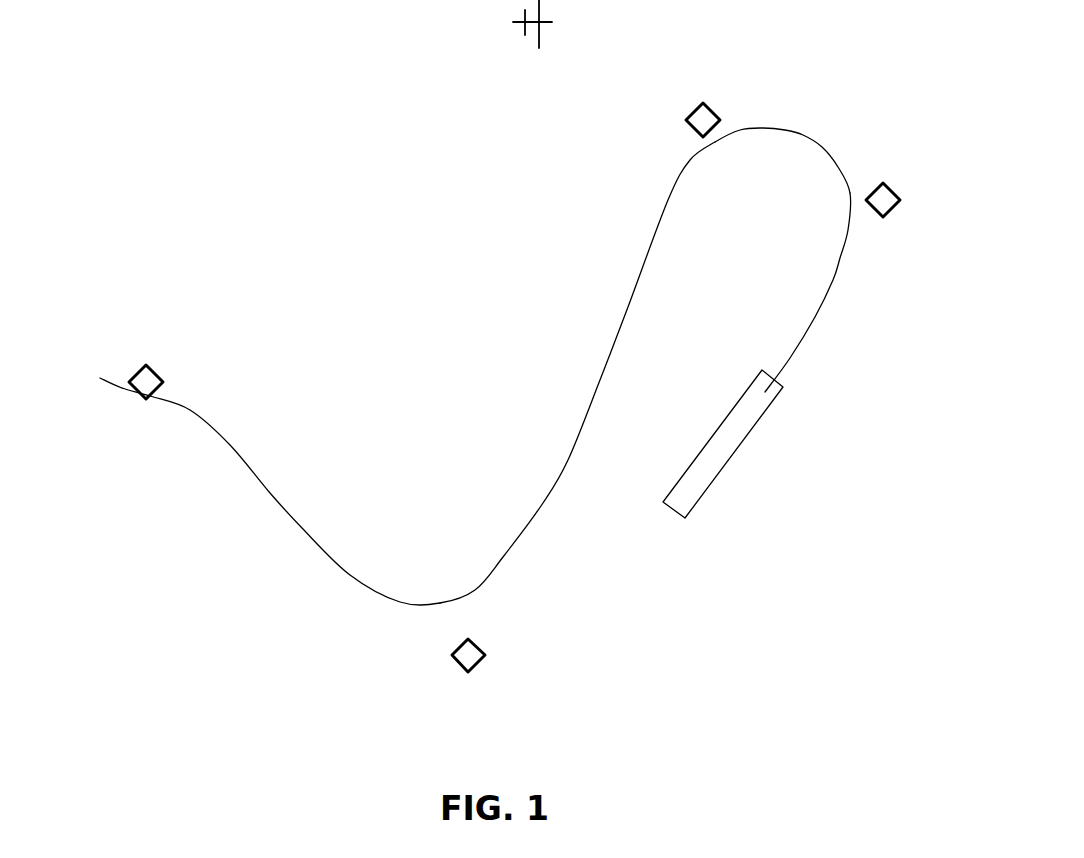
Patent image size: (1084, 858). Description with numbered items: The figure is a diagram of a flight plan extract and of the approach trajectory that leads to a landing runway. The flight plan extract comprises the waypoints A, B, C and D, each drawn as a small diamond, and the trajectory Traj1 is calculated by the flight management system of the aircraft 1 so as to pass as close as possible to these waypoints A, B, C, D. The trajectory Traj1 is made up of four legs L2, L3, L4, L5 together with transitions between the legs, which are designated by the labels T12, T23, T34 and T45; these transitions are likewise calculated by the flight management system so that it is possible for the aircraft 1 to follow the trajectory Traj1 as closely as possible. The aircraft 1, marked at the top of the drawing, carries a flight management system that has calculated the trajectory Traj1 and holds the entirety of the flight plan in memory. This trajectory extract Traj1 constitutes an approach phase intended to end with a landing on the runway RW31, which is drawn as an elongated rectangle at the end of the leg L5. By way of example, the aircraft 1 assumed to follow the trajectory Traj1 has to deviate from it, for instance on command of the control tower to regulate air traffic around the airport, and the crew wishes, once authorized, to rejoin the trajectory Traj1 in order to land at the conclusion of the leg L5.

The aircraft 1 is at (515, 22).
The trajectory Traj1 is at (503, 360).
The leg L2 is at (302, 528).
The leg L3 is at (628, 307).
The leg L4 is at (803, 135).
The leg L5 is at (815, 317).
The waypoint A is at (150, 364).
The waypoint B is at (470, 650).
The waypoint C is at (702, 103).
The waypoint D is at (888, 216).
The transition T12 is at (122, 388).
The transition T23 is at (440, 603).
The transition T34 is at (714, 143).
The transition T45 is at (847, 200).
The landing runway RW31 is at (765, 402).